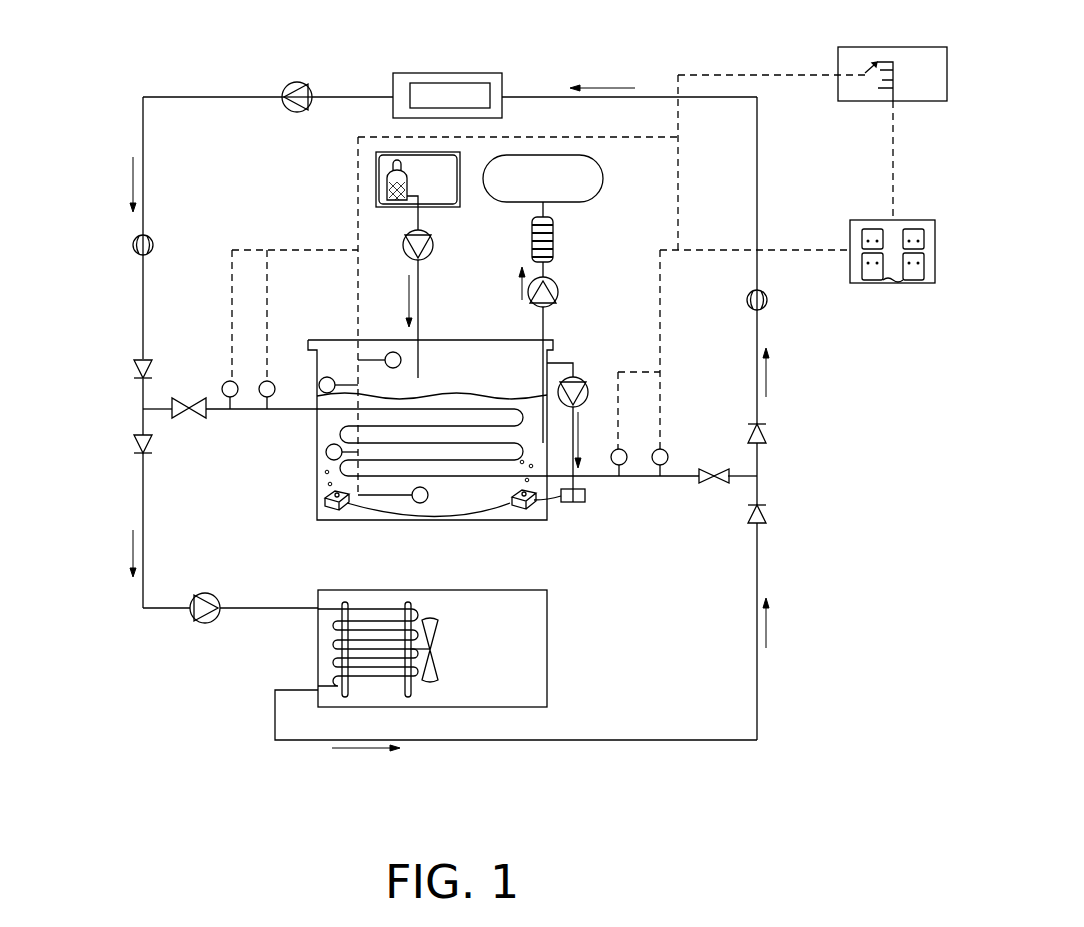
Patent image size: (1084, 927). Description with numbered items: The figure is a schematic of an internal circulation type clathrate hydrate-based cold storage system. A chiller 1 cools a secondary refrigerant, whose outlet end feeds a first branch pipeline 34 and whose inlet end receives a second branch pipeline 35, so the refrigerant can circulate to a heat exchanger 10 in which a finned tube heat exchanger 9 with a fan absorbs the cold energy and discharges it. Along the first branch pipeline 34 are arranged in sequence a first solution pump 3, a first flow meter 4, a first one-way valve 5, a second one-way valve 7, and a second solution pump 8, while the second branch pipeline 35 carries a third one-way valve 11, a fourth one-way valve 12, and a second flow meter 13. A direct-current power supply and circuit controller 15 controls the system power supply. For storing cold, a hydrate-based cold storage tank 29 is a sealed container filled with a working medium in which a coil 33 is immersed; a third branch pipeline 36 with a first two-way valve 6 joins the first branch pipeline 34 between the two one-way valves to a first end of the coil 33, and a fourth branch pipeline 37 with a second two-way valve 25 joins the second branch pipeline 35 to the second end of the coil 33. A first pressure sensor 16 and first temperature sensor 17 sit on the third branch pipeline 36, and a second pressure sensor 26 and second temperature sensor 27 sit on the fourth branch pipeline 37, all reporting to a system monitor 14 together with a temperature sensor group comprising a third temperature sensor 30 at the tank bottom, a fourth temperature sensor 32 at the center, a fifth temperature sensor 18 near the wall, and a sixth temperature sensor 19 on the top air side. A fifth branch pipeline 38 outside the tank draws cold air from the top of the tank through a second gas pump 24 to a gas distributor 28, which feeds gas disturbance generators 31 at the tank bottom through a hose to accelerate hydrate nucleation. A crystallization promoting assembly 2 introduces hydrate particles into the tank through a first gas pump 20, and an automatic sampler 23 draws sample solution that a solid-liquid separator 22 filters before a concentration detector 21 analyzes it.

The chiller 1 is at (445, 72).
The crystallization promoting assembly 2 is at (377, 152).
The first solution pump 3 is at (287, 82).
The first flow meter 4 is at (133, 241).
The first one-way valve 5 is at (140, 372).
The first two-way valve 6 is at (172, 406).
The second one-way valve 7 is at (140, 443).
The second solution pump 8 is at (193, 616).
The heat exchanger 9 is at (333, 622).
The heat exchanger 10 is at (317, 664).
The third one-way valve 11 is at (763, 514).
The fourth one-way valve 12 is at (763, 435).
The second flow meter 13 is at (768, 300).
The system monitor 14 is at (850, 223).
The direct-current power supply and circuit controller 15 is at (860, 102).
The first pressure sensor 16 is at (226, 381).
The first temperature sensor 17 is at (263, 381).
The fifth temperature sensor 18 is at (319, 380).
The sixth temperature sensor 19 is at (389, 352).
The first gas pump 20 is at (403, 240).
The concentration detector 21 is at (603, 178).
The solid-liquid separator 22 is at (554, 240).
The automatic sampler 23 is at (560, 292).
The second gas pump 24 is at (587, 388).
The second two-way valve 25 is at (720, 483).
The second pressure sensor 26 is at (652, 468).
The second temperature sensor 27 is at (617, 465).
The gas distributor 28 is at (570, 505).
The hydrate-based cold storage tank 29 is at (472, 520).
The third temperature sensor 30 is at (415, 503).
The gas disturbance generator 31 is at (333, 507).
The fourth temperature sensor 32 is at (332, 460).
The coil 33 is at (340, 428).
The first branch pipeline 34 is at (183, 95).
The second branch pipeline 35 is at (670, 95).
The third branch pipeline 36 is at (247, 410).
The fourth branch pipeline 37 is at (683, 478).
The fifth branch pipeline 38 is at (573, 362).